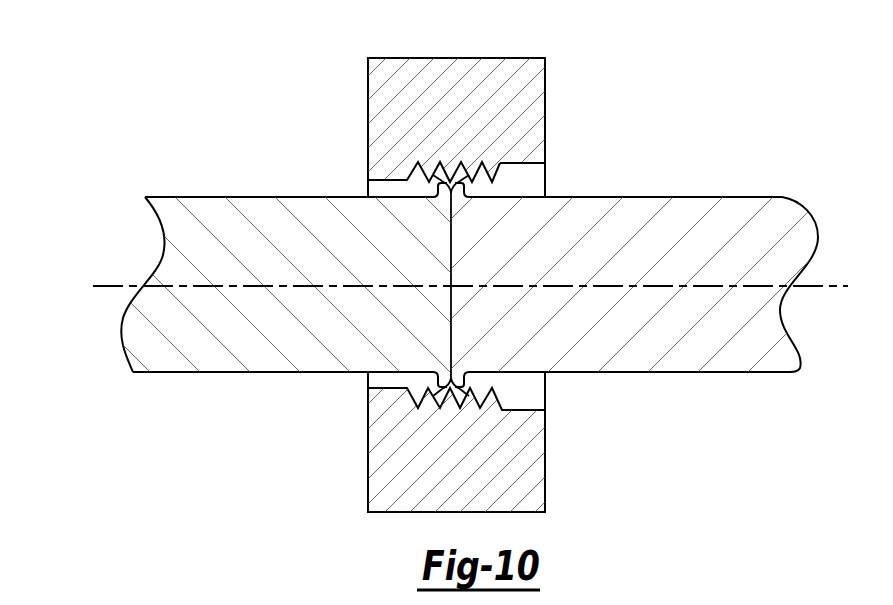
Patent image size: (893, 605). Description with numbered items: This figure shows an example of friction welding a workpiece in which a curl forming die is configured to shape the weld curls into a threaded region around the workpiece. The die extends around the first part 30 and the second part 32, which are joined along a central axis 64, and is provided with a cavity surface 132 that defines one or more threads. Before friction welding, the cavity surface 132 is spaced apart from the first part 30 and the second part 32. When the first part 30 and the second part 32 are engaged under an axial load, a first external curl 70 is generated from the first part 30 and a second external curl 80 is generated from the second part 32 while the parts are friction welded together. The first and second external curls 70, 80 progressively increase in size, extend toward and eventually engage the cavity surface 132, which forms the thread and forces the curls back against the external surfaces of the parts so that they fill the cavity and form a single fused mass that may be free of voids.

The first part 30 is at (317, 197).
The second part 32 is at (730, 197).
The centerline axis 64 is at (107, 286).
The first external curl 70 is at (430, 181).
The second external curl 80 is at (490, 179).
The cavity surface 132 is at (500, 165).